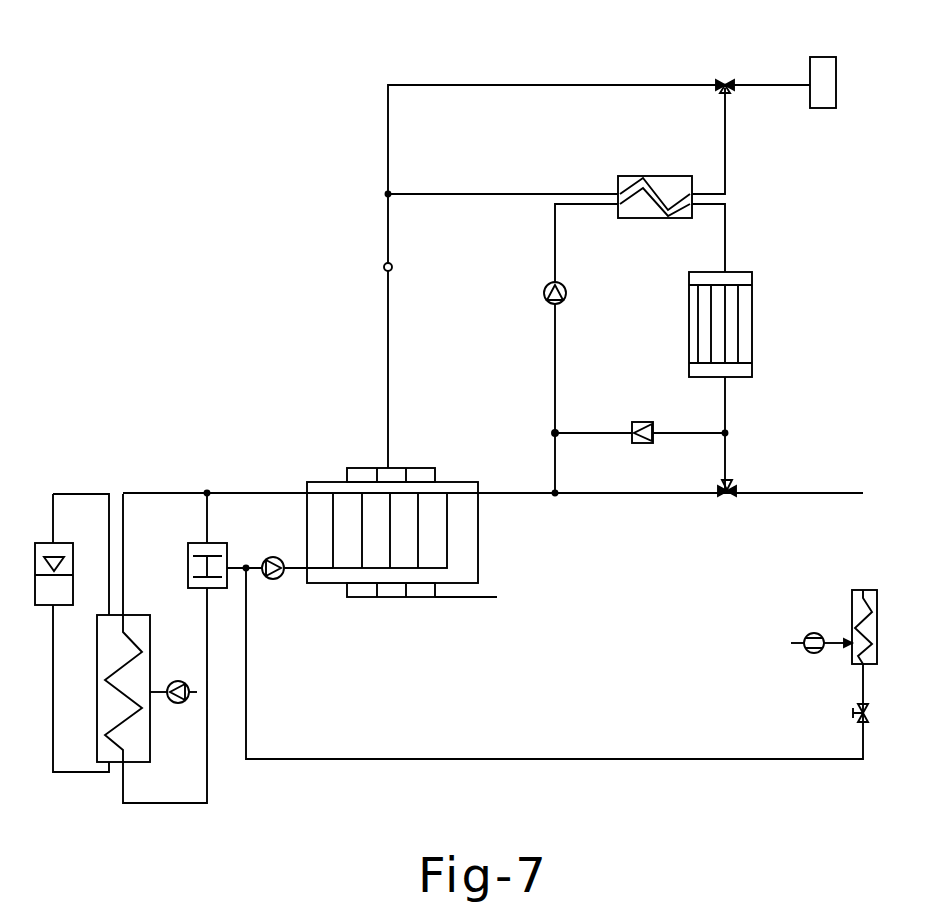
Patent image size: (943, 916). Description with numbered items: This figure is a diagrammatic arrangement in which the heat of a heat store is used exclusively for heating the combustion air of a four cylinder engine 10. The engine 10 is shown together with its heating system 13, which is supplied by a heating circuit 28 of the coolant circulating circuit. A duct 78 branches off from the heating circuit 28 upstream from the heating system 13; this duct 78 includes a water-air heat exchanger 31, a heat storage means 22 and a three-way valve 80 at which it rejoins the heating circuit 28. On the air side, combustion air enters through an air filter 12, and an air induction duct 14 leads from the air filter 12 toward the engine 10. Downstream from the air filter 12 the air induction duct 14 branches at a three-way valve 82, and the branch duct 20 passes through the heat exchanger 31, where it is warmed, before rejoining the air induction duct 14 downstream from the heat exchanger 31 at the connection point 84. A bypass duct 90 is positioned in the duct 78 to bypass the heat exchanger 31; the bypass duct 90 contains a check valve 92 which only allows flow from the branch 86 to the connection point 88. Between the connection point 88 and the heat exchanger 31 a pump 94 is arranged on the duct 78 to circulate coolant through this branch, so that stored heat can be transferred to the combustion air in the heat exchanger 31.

The engine 10 is at (340, 575).
The air filter 12 is at (826, 108).
The heating system 13 is at (780, 630).
The air induction duct 14 is at (390, 378).
The branch duct 20 is at (437, 195).
The heat storage means 22 is at (753, 337).
The heating circuit 28 is at (857, 558).
The water-air heat exchanger 31 is at (655, 218).
The duct 78 is at (553, 467).
The three-way valve 80 is at (735, 488).
The three-way valve 82 is at (725, 79).
The connection point 84 is at (388, 194).
The branch 86 is at (725, 436).
The connection point 88 is at (556, 432).
The bypass duct 90 is at (595, 433).
The check valve 92 is at (641, 422).
The pump 94 is at (543, 296).